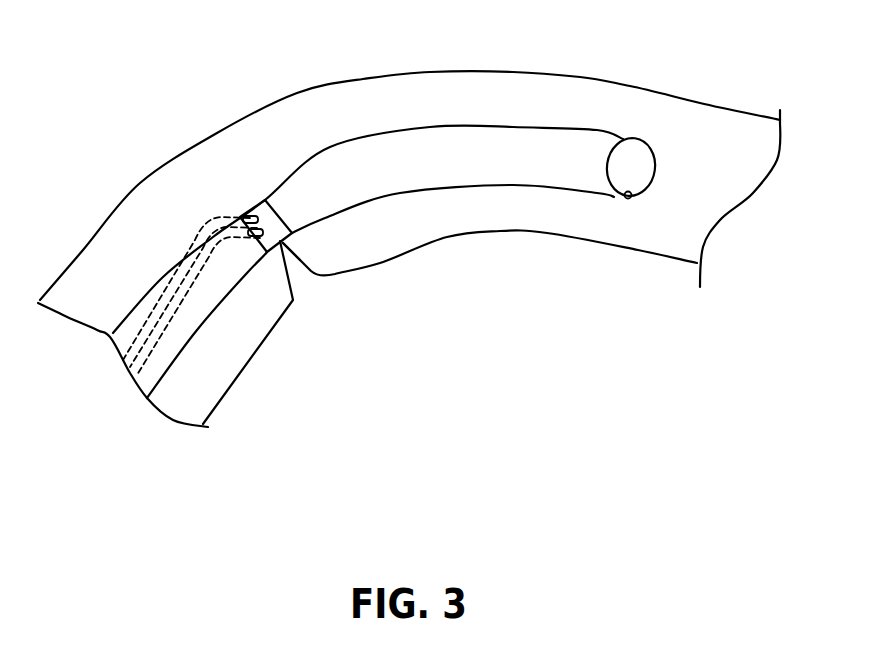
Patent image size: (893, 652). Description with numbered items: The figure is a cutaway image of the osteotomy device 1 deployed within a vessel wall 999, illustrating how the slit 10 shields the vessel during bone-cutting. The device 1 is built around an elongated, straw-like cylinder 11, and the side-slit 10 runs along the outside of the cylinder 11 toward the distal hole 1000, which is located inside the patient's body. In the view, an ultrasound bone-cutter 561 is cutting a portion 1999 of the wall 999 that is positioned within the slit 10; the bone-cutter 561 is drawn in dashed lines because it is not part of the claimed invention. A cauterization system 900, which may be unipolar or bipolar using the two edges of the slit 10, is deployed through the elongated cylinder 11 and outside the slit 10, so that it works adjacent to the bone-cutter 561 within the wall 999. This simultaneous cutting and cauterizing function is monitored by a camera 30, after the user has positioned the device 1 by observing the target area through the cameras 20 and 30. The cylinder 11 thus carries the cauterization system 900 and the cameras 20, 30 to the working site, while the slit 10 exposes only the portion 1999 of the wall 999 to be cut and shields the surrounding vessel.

The osteotomy device 1 is at (313, 127).
The slit 10 is at (257, 207).
The elongated cylinder 11 is at (176, 249).
The wall 999 is at (416, 72).
The ultrasound bone-cutter 561 is at (277, 220).
The cauterization system 900 is at (257, 240).
The camera 30 is at (256, 274).
The portion 1999 is at (287, 255).
The distal hole 1000 is at (648, 158).
The camera 20 is at (636, 197).